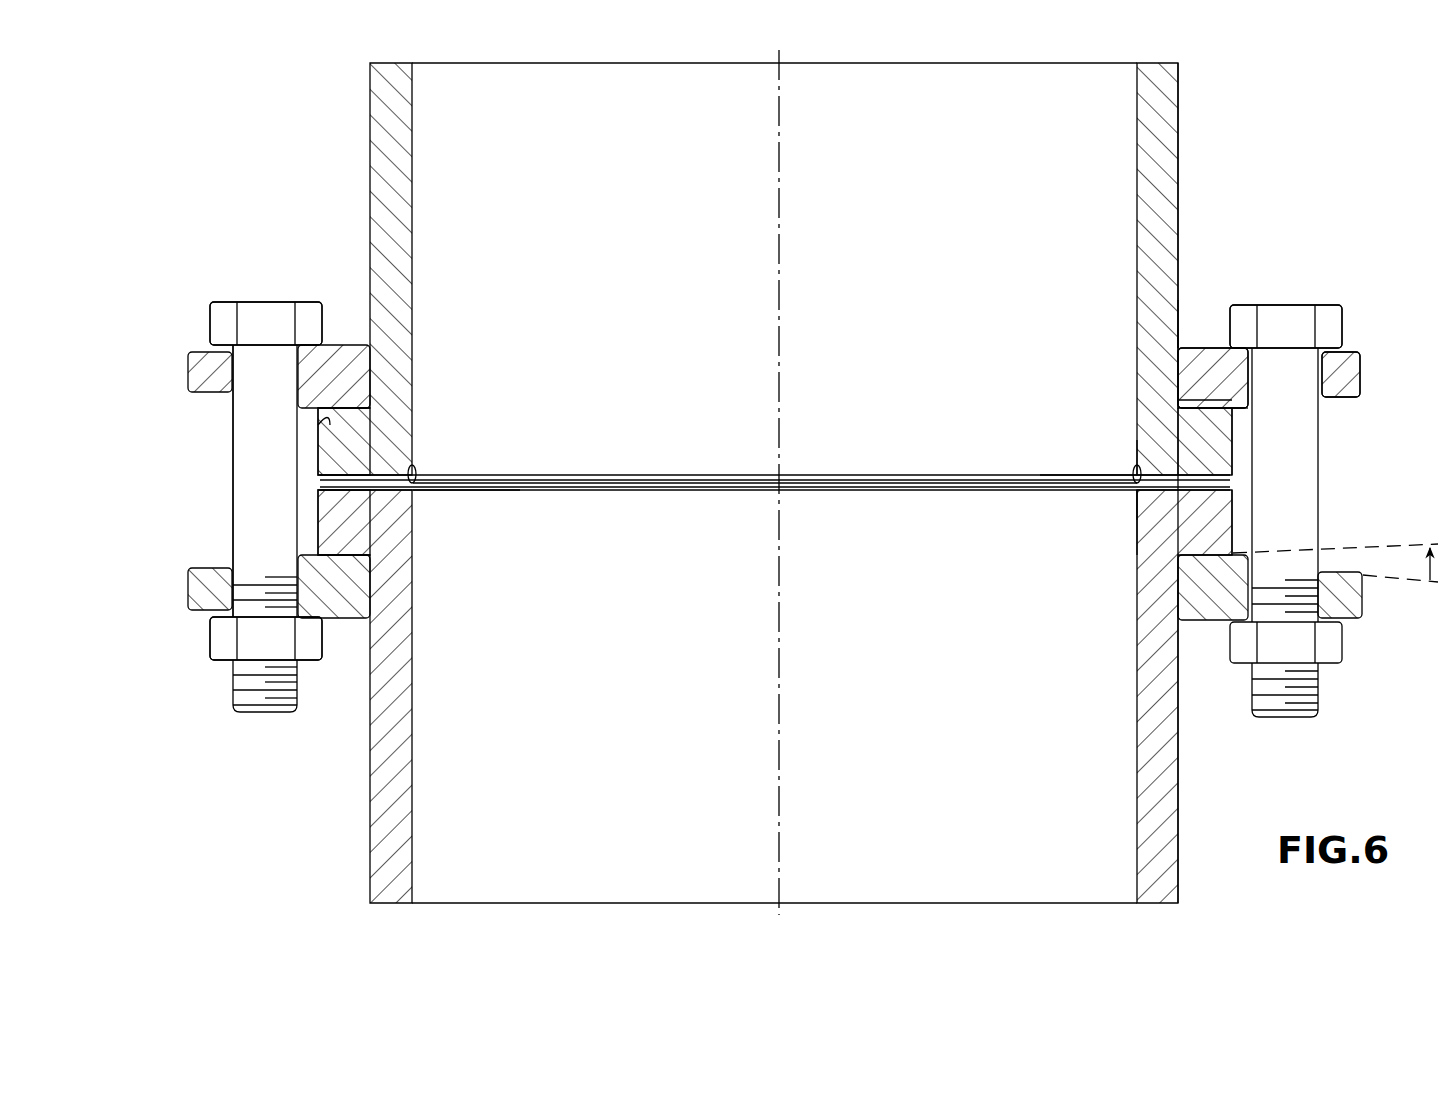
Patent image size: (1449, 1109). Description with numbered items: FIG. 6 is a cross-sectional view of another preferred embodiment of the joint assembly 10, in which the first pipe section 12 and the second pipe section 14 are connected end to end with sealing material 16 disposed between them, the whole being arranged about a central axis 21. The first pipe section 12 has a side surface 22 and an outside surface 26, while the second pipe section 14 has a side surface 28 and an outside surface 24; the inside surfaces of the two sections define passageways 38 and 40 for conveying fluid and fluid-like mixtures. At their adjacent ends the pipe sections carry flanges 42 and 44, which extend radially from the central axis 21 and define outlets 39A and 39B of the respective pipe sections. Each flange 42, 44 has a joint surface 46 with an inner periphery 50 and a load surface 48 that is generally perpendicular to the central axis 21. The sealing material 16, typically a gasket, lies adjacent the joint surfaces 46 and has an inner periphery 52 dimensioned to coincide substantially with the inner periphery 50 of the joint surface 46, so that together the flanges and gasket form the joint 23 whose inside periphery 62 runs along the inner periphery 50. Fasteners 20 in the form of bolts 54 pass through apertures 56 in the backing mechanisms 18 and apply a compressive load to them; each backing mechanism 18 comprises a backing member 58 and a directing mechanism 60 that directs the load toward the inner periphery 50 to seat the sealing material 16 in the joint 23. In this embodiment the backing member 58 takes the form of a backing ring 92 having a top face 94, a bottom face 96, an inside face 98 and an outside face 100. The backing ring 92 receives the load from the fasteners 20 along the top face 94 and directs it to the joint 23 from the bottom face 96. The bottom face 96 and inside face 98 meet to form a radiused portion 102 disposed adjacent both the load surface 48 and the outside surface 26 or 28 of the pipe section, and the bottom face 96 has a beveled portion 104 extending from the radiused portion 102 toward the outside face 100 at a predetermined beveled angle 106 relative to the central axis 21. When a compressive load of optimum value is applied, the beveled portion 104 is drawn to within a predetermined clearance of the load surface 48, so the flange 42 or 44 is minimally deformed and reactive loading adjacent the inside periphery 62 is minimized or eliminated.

The joint assembly 10 is at (1335, 135).
The first pipe section 12 is at (1172, 150).
The second pipe section 14 is at (1172, 815).
The sealing material 16 is at (320, 483).
The backing mechanism 18 is at (1207, 280).
The fasteners 20 is at (232, 520).
The central axis 21 is at (779, 130).
The side surface of first pipe section 22 is at (1137, 158).
The joint 23 is at (1108, 512).
The outside surface of second pipe section 24 is at (1137, 808).
The outside surface of first pipe section 26 is at (1180, 186).
The side surface of second pipe section 28 is at (1178, 778).
The passageway 38 is at (904, 219).
The outlet of first pipe section 39A is at (1035, 462).
The outlet of second pipe section 39B is at (513, 505).
The passageway 40 is at (904, 706).
The flange 42 is at (1232, 470).
The flange 44 is at (1232, 525).
The joint surface 46 is at (1140, 445).
The load surface 48 is at (318, 425).
The inner periphery of joint surface 50 is at (413, 466).
The inner periphery of sealing material 52 is at (535, 478).
The bolts 54 is at (232, 440).
The apertures 56 is at (233, 368).
The backing member 58 is at (192, 590).
The directing mechanism 60 is at (378, 408).
The inside periphery of joint 62 is at (400, 502).
The backing ring 92 is at (1345, 370).
The top face 94 is at (1178, 340).
The bottom face 96 is at (1245, 405).
The inside face 98 is at (1200, 372).
The outside face 100 is at (1362, 375).
The radiused portion 102 is at (1182, 418).
The beveled portion 104 is at (1196, 402).
The beveled angle 106 is at (1428, 582).